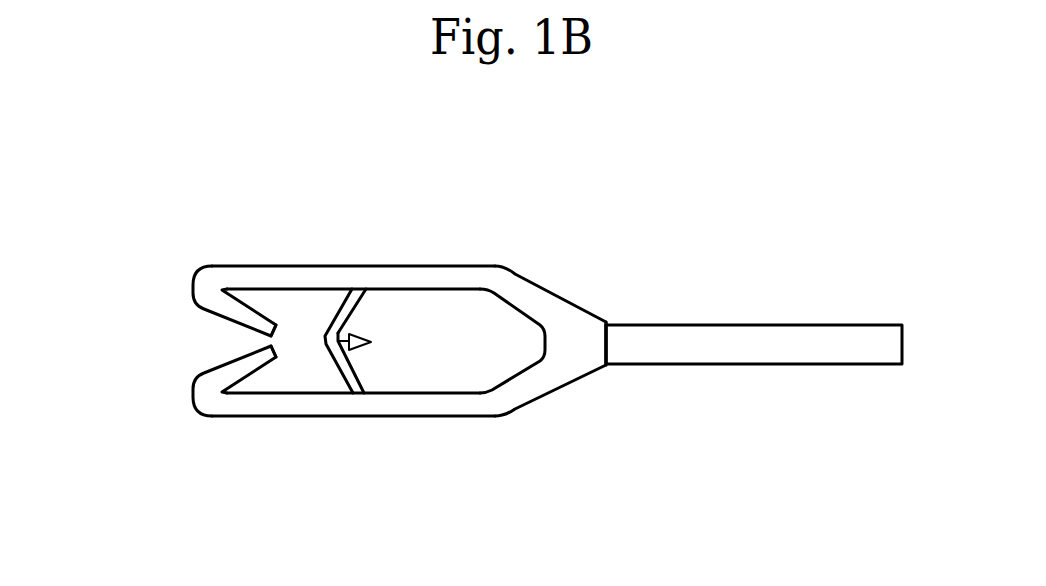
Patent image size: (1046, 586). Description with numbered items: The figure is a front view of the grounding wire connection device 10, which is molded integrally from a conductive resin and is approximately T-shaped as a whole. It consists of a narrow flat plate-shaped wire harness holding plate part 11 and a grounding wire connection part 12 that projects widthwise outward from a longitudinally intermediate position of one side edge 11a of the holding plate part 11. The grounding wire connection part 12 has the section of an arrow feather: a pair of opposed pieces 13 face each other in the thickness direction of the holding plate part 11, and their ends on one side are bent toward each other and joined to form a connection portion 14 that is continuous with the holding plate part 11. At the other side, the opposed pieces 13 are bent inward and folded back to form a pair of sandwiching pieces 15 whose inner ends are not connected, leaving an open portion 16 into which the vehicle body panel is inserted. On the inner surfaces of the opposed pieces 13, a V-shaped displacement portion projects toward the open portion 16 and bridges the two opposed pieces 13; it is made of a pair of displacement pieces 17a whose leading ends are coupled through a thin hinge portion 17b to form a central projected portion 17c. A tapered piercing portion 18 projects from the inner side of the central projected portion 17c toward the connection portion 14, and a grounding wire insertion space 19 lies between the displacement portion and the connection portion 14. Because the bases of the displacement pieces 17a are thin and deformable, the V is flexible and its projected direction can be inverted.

The grounding wire connection device 10 is at (509, 234).
The wire harness holding plate part 11 is at (822, 325).
The side edge 11a is at (597, 347).
The grounding wire connection part 12 is at (231, 256).
The opposed pieces 13 is at (295, 266).
The connection portion 14 is at (572, 350).
The sandwiching pieces 15 is at (225, 314).
The open portion 16 is at (262, 343).
The displacement pieces 17a is at (327, 330).
The hinge portion 17b is at (363, 312).
The central projected portion 17c is at (323, 343).
The piercing portion 18 is at (372, 346).
The grounding wire insertion space 19 is at (492, 345).